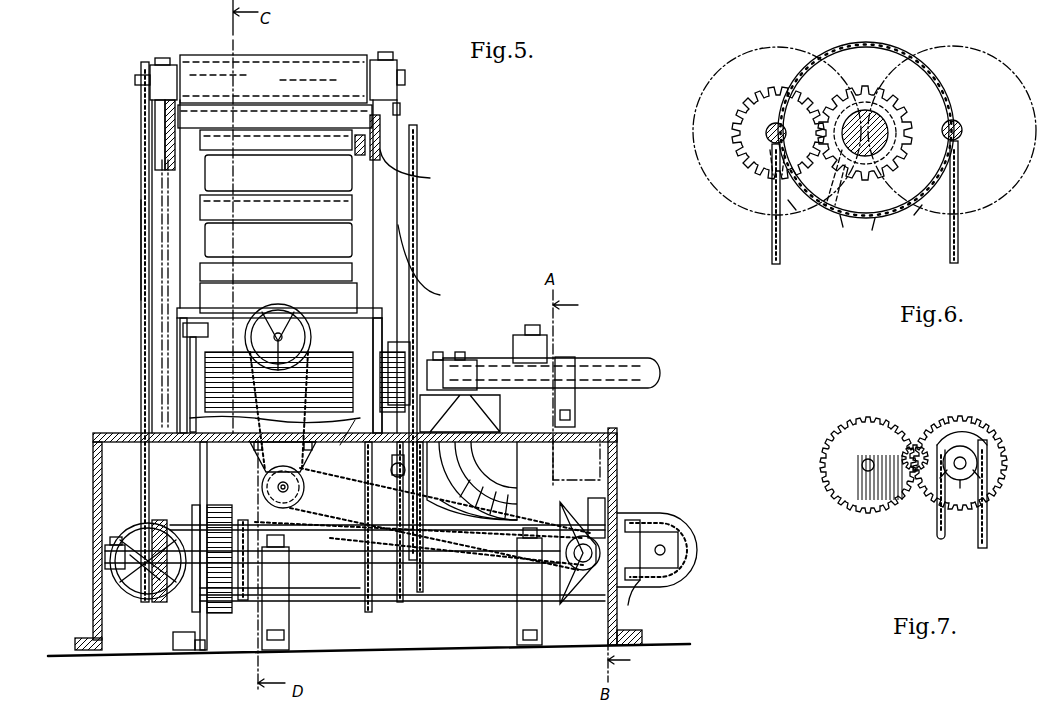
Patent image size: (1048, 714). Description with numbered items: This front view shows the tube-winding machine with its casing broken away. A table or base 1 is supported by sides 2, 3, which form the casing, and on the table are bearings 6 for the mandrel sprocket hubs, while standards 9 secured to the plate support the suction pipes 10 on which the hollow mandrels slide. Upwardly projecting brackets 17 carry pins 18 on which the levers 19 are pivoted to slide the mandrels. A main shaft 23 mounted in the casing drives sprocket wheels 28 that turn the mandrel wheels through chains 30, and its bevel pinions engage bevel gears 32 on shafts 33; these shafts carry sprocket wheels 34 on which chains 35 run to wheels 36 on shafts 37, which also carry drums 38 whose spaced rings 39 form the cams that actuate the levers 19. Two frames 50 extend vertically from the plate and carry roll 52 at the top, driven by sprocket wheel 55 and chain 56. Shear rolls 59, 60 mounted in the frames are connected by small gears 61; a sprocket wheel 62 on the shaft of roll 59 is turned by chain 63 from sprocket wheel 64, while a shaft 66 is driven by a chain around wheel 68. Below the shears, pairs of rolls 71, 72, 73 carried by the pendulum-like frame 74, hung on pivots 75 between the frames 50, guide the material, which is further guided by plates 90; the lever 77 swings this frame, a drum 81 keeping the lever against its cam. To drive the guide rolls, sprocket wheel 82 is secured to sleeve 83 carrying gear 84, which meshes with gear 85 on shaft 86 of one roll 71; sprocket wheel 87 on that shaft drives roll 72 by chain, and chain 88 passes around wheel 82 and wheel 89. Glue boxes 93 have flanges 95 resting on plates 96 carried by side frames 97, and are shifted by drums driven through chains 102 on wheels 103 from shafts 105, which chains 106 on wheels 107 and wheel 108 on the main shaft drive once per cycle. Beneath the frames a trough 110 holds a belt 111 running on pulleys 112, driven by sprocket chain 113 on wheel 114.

In FIG. 5, the table or base 1 is at (120, 433).
In FIG. 5, the side 2 is at (617, 468).
In FIG. 5, the side 3 is at (93, 530).
In FIG. 5, the bearings 6 is at (340, 442).
In FIG. 5, the standards 9 is at (565, 392).
In FIG. 5, the suction pipes 10 is at (488, 358).
In FIG. 5, the brackets 17 is at (460, 414).
In FIG. 5, the pins 18 is at (465, 360).
In FIG. 5, the levers 19 is at (522, 336).
In FIG. 5, the main shaft 23 is at (582, 570).
In FIG. 5, the sprocket wheels 28 is at (372, 583).
In FIG. 5, the chains 30 is at (368, 503).
In FIG. 5, the bevel gears 32 is at (535, 590).
In FIG. 5, the shafts 33 is at (462, 566).
In FIG. 5, the sprocket wheels 34 is at (380, 575).
In FIG. 5, the chains 35 is at (410, 513).
In FIG. 5, the wheels 36 is at (388, 474).
In FIG. 5, the shafts 37 is at (392, 458).
In FIG. 5, the drums 38 is at (522, 478).
In FIG. 5, the rings 39 is at (520, 512).
In FIG. 5, the frames 50 is at (409, 240).
In FIG. 5, the roll 52 is at (296, 58).
In FIG. 5, the sprocket wheel 55 is at (140, 68).
In FIG. 5, the chain 56 is at (141, 205).
In FIG. 5, the shear roll 59 is at (325, 110).
In FIG. 7, the shear roll 59 is at (972, 428).
In FIG. 7, the shear roll 60 is at (850, 438).
In FIG. 5, the small gears 61 is at (395, 108).
In FIG. 7, the small gears 61 is at (918, 444).
In FIG. 5, the sprocket wheel 62 is at (160, 115).
In FIG. 7, the sprocket wheel 62 is at (972, 465).
In FIG. 5, the chain 63 is at (155, 152).
In FIG. 7, the chain 63 is at (988, 520).
In FIG. 5, the sprocket wheel 64 is at (160, 600).
In FIG. 5, the shaft 66 is at (118, 560).
In FIG. 5, the wheel 68 is at (243, 600).
In FIG. 5, the rolls 71 is at (290, 143).
In FIG. 6, the rolls 71 is at (1000, 60).
In FIG. 5, the rolls 72 is at (305, 195).
In FIG. 5, the rolls 73 is at (300, 263).
In FIG. 5, the pendulum-like frame 74 is at (412, 248).
In FIG. 6, the pivots 75 is at (880, 125).
In FIG. 5, the lever 77 is at (207, 480).
In FIG. 5, the drum 81 is at (220, 613).
In FIG. 5, the sprocket wheel 82 is at (382, 122).
In FIG. 6, the sprocket wheel 82 is at (866, 136).
In FIG. 6, the sleeve 83 is at (820, 220).
In FIG. 6, the gear 84 is at (862, 95).
In FIG. 5, the gear 85 is at (418, 169).
In FIG. 6, the gear 85 is at (778, 133).
In FIG. 6, the shaft 86 is at (770, 140).
In FIG. 5, the sprocket wheel 87 is at (356, 150).
In FIG. 5, the chain 88 is at (428, 261).
In FIG. 6, the chain 88 is at (772, 260).
In FIG. 5, the wheel 89 is at (421, 592).
In FIG. 5, the plates 90 is at (278, 206).
In FIG. 5, the rectangular boxes 93 is at (278, 298).
In FIG. 5, the flanges 95 is at (382, 308).
In FIG. 5, the plates 96 is at (245, 312).
In FIG. 5, the side frames 97 is at (425, 312).
In FIG. 5, the chains 102 is at (310, 350).
In FIG. 5, the wheels 103 is at (278, 337).
In FIG. 5, the shafts 105 is at (305, 487).
In FIG. 5, the chains 106 is at (419, 543).
In FIG. 5, the wheels 107 is at (300, 503).
In FIG. 5, the wheel 108 is at (562, 560).
In FIG. 5, the trough 110 is at (578, 472).
In FIG. 5, the belt 111 is at (380, 598).
In FIG. 5, the pulleys 112 is at (140, 575).
In FIG. 5, the sprocket chain 113 is at (651, 600).
In FIG. 5, the wheel 114 is at (678, 545).